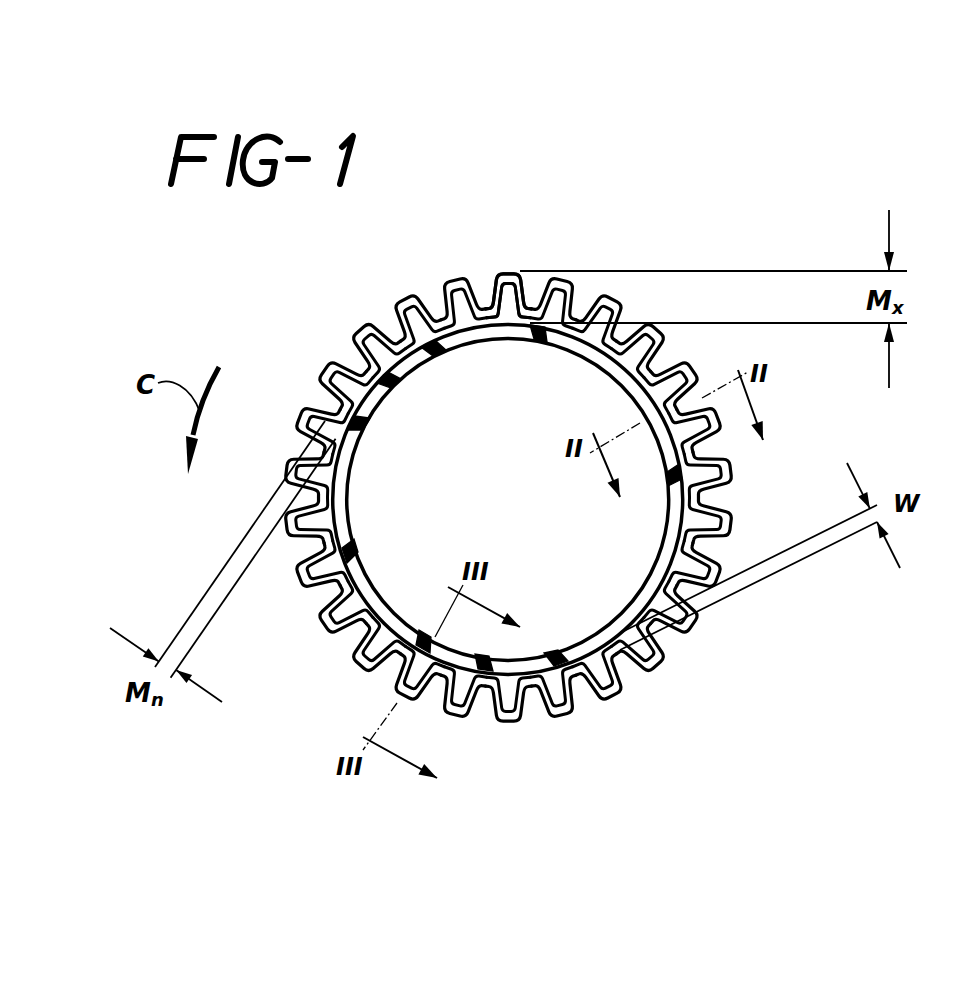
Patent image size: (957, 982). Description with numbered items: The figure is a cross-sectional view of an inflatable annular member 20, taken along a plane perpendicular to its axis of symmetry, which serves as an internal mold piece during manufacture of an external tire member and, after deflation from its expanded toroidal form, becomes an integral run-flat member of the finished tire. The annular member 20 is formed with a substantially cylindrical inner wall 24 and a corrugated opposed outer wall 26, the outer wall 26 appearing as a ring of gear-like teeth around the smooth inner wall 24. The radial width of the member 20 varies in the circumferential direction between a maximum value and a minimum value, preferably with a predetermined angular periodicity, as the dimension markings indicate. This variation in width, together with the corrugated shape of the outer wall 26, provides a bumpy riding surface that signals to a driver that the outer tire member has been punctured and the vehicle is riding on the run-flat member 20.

The inflatable annular member 20 is at (297, 347).
The inner wall 24 is at (353, 483).
The corrugated outer wall 26 is at (500, 272).